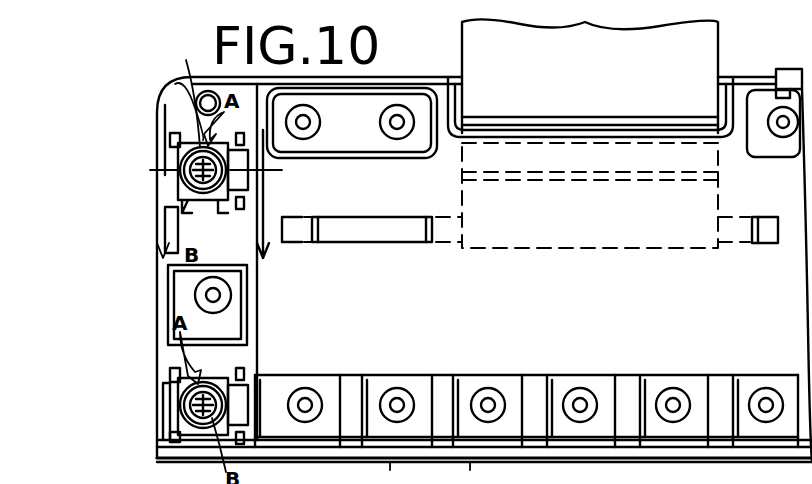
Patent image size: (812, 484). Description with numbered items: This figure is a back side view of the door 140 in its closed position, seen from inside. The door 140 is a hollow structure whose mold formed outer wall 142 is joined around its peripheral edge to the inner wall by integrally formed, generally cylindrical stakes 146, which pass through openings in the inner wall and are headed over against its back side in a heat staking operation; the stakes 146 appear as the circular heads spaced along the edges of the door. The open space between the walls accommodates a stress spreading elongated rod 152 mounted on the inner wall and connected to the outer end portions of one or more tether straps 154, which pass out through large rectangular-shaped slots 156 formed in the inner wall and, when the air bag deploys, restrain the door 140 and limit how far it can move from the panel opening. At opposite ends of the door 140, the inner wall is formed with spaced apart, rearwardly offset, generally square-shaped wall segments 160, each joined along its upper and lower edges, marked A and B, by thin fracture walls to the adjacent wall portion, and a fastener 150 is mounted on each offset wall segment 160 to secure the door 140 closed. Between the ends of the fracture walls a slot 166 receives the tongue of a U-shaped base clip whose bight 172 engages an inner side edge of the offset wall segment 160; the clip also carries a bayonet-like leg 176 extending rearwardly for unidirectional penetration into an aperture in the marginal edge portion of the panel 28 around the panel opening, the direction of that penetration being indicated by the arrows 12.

The card reader slot width 12 is at (226, 141).
The base plate 28 is at (394, 473).
The door 140 is at (617, 480).
The outer wall 142 is at (503, 478).
The stakes 146 is at (488, 400).
The fastener 150 is at (262, 262).
The stress spreading elongated rod 152 is at (366, 230).
The tether straps 154 is at (600, 90).
The slots 156 is at (530, 116).
The wall segments 160 is at (212, 242).
The slot 166 is at (165, 470).
The bight 172 is at (258, 158).
The leg 176 is at (200, 470).